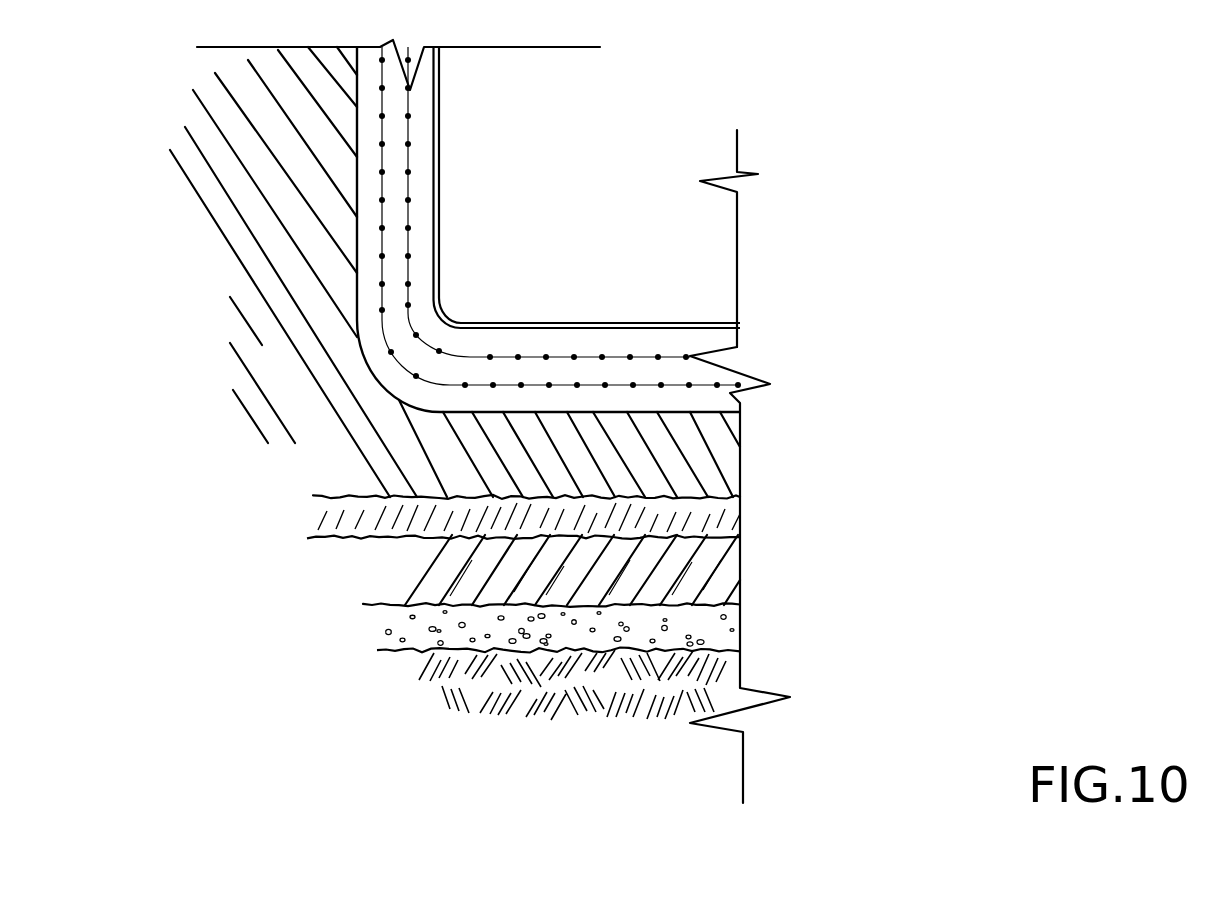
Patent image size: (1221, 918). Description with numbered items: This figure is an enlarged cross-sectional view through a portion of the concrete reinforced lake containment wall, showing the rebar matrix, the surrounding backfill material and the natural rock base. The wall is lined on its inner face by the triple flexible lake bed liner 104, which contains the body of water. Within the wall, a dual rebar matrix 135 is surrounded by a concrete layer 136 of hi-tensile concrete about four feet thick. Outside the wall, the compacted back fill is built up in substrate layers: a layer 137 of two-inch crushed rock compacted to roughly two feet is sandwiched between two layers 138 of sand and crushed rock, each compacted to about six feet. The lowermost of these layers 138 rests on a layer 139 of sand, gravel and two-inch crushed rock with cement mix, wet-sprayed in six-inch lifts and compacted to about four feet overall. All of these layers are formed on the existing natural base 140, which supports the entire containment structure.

The triple flexible lake bed liner 104 is at (663, 324).
The dual rebar matrix 135 is at (380, 148).
The concrete layer 136 is at (507, 345).
The layer of 2-inch crushed rock 137 is at (327, 513).
The layers of sand and crushed rock 138 is at (660, 448).
The layer of sand, gravel and 2-inch crushed rock with cement mix 139 is at (727, 622).
The natural base 140 is at (590, 700).